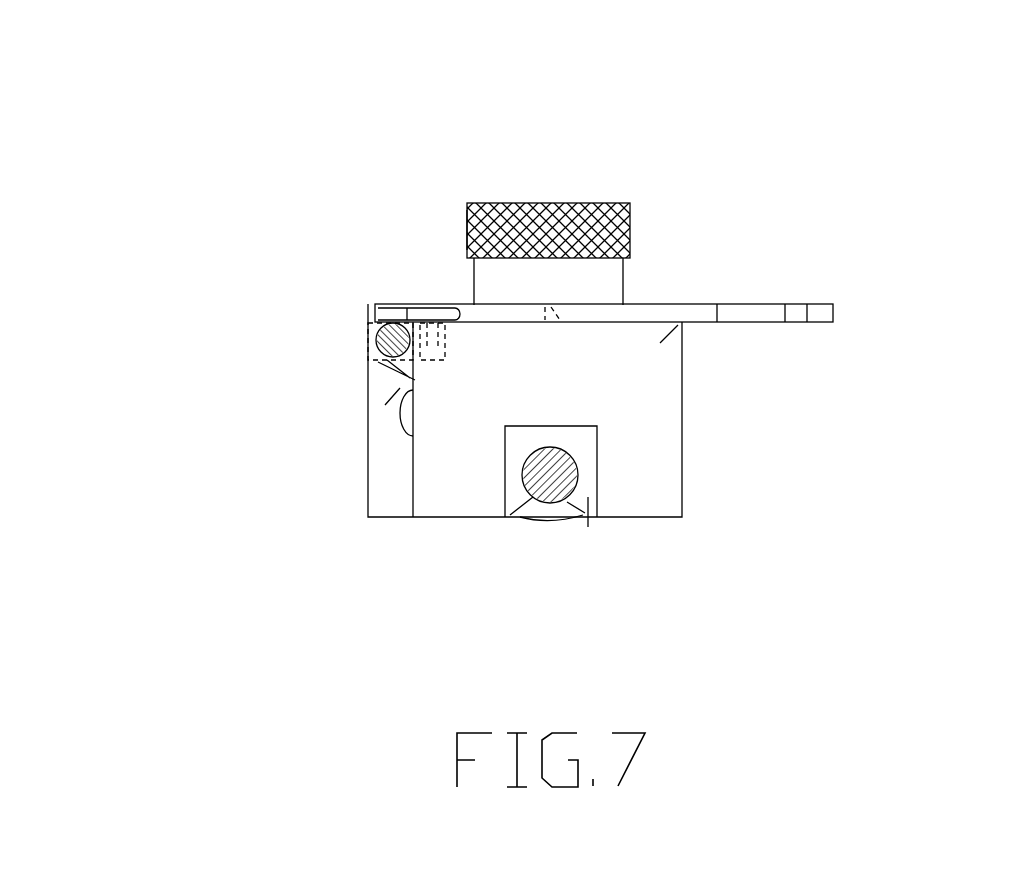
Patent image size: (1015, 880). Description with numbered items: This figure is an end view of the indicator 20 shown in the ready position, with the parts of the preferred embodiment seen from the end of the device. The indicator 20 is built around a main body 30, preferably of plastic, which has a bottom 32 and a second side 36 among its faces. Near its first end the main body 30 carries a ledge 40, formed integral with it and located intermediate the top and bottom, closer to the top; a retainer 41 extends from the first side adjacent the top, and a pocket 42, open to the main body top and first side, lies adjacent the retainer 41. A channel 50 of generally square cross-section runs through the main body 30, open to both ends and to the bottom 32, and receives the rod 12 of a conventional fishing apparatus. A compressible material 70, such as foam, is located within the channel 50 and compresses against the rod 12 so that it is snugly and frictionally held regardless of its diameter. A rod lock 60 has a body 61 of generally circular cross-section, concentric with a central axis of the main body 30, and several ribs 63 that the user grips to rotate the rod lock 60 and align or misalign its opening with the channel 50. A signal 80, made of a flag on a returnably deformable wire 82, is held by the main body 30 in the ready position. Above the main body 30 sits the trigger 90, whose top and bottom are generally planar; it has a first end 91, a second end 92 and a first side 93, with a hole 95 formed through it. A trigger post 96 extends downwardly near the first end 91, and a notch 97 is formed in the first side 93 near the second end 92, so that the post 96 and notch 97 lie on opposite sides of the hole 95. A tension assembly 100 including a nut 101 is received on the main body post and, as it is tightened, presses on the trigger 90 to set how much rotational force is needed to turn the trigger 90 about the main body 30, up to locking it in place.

The indicator 20 is at (727, 173).
The tension assembly 100 is at (634, 218).
The nut 101 is at (464, 217).
The pocket 42 is at (457, 297).
The first end 91 is at (415, 303).
The retainer 41 is at (378, 303).
The wire 82 is at (376, 337).
The signal 80 is at (372, 356).
The ledge 40 is at (397, 365).
The trigger post 96 is at (398, 403).
The ribs 63 is at (403, 440).
The channel 50 is at (505, 465).
The rod 12 is at (507, 517).
The rod lock 60 is at (535, 522).
The body 61 is at (563, 560).
The compressible material 70 is at (588, 520).
The bottom 32 is at (627, 518).
The second side 36 is at (682, 478).
The main body 30 is at (682, 425).
The first side 93 is at (748, 313).
The trigger 90 is at (797, 305).
The second end 92 is at (835, 314).
The notch 97 is at (797, 323).
The hole 95 is at (607, 305).